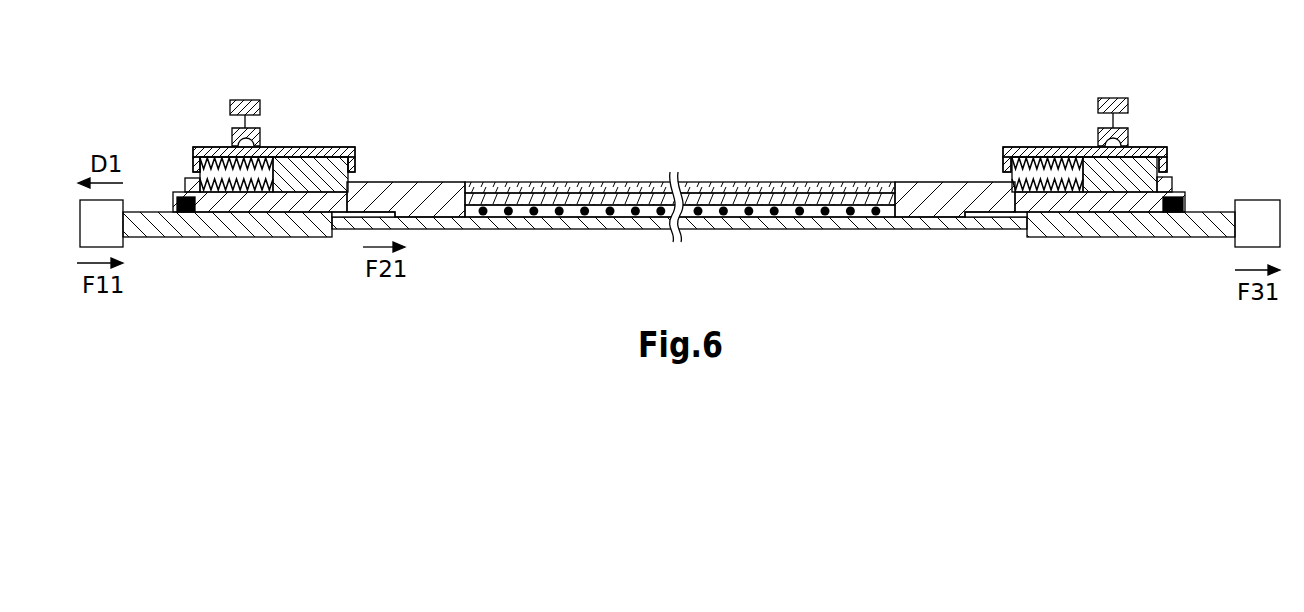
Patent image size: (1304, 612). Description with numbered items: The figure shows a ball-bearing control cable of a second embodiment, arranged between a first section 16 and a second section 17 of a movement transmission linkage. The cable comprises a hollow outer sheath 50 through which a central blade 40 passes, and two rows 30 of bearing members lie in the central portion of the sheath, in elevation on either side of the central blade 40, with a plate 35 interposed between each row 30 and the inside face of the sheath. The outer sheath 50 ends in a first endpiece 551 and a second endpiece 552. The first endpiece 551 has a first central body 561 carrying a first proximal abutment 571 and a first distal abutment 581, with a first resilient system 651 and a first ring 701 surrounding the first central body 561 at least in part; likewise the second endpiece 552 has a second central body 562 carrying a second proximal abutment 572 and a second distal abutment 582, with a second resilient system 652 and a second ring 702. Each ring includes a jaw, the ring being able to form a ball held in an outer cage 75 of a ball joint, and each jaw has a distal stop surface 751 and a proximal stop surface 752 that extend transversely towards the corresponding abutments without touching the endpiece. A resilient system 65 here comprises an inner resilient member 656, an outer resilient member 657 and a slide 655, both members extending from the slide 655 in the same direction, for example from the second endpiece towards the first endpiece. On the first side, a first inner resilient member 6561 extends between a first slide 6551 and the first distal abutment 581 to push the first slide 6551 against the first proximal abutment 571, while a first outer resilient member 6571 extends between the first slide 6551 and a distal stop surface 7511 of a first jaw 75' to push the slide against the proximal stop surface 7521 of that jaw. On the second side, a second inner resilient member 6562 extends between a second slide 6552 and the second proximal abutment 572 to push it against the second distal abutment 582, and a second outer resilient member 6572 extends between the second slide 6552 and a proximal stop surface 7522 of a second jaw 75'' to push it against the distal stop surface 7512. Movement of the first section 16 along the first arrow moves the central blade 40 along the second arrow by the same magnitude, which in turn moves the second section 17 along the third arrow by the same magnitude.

The first section 16 is at (114, 236).
The second section 17 is at (1270, 236).
The rows of bearing members 30 is at (607, 195).
The plate 35 is at (645, 207).
The central blade 40 is at (587, 229).
The outer sheath 50 is at (567, 182).
The first endpiece 551 is at (428, 149).
The second endpiece 552 is at (921, 139).
The first central body 561 is at (272, 200).
The second central body 562 is at (1020, 228).
The first proximal abutment 571 is at (419, 172).
The second proximal abutment 572 is at (917, 156).
The first distal abutment 581 is at (186, 178).
The second distal abutment 582 is at (1172, 185).
The resilient system 65 is at (365, 82).
The slide 655 is at (365, 82).
The first slide 6551 is at (352, 147).
The second slide 6552 is at (1165, 157).
The inner resilient member 656 is at (272, 110).
The first inner resilient member 6561 is at (266, 157).
The second inner resilient member 6562 is at (1057, 195).
The outer resilient member 657 is at (205, 113).
The first outer resilient member 6571 is at (197, 147).
The second outer resilient member 6572 is at (1032, 150).
The first resilient system 651 is at (228, 201).
The second resilient system 652 is at (1045, 210).
The first ring 701 is at (285, 157).
The second ring 702 is at (1090, 157).
The outer cage 75 is at (735, 128).
The first jaw 75' is at (219, 86).
The second jaw 75'' is at (1142, 100).
The distal stop surface 751 is at (127, 130).
The first distal stop surface 7511 is at (196, 160).
The second distal stop surface 7512 is at (1168, 170).
The proximal stop surface 752 is at (431, 109).
The first proximal stop surface 7521 is at (357, 165).
The second proximal stop surface 7522 is at (1007, 167).